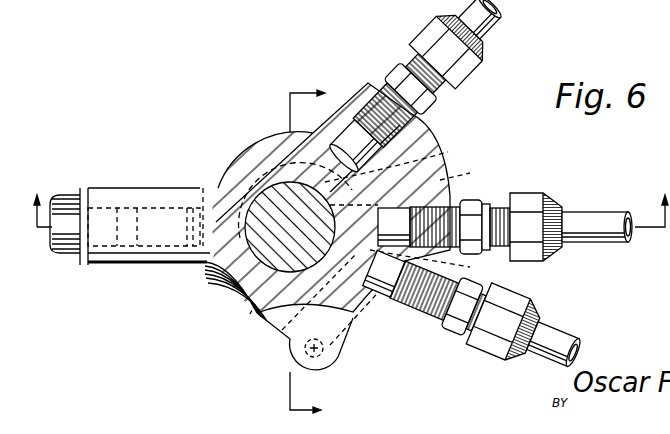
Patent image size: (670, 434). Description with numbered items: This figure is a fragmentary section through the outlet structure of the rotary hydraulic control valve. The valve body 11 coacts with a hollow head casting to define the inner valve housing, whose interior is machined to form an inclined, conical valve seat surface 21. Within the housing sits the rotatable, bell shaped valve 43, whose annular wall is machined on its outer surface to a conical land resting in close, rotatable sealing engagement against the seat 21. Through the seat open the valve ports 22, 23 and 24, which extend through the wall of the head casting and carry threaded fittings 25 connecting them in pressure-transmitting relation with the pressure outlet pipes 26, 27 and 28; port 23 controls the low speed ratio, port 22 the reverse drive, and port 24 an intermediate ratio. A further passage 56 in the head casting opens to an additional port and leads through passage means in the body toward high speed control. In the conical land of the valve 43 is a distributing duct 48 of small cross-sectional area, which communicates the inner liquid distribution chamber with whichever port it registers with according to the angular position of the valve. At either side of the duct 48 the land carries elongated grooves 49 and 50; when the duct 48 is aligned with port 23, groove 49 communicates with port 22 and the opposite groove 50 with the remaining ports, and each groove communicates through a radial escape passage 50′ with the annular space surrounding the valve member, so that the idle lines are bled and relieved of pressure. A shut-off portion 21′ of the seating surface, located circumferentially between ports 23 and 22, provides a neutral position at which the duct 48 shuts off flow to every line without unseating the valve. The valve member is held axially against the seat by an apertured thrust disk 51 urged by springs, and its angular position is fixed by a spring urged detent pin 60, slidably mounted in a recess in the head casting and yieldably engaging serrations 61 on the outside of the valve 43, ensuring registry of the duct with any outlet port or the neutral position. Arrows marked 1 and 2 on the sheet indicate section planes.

The section line 1- 1 is at (297, 250).
The section line 2- 2 is at (348, 225).
The valve body 11 is at (223, 172).
The valve seat surface 21 is at (212, 268).
The shut-off portion 21′ is at (298, 141).
The valve port 22 is at (371, 129).
The valve port 23 is at (411, 251).
The valve port 24 is at (293, 340).
The threaded fitting 25 is at (458, 75).
The pressure outlet pipe 26 is at (486, 22).
The pressure outlet pipe 27 is at (580, 212).
The pressure outlet pipe 28 is at (560, 337).
The bell shaped valve 43 is at (230, 289).
The distributing duct 48 is at (246, 306).
The elongated groove 49 is at (395, 164).
The elongated groove 50 is at (252, 318).
The radial escape passage 50′ is at (415, 220).
The thrust disk 51 is at (322, 372).
The passage 56 is at (344, 346).
The detent pin 60 is at (203, 188).
The serrations 61 is at (260, 142).